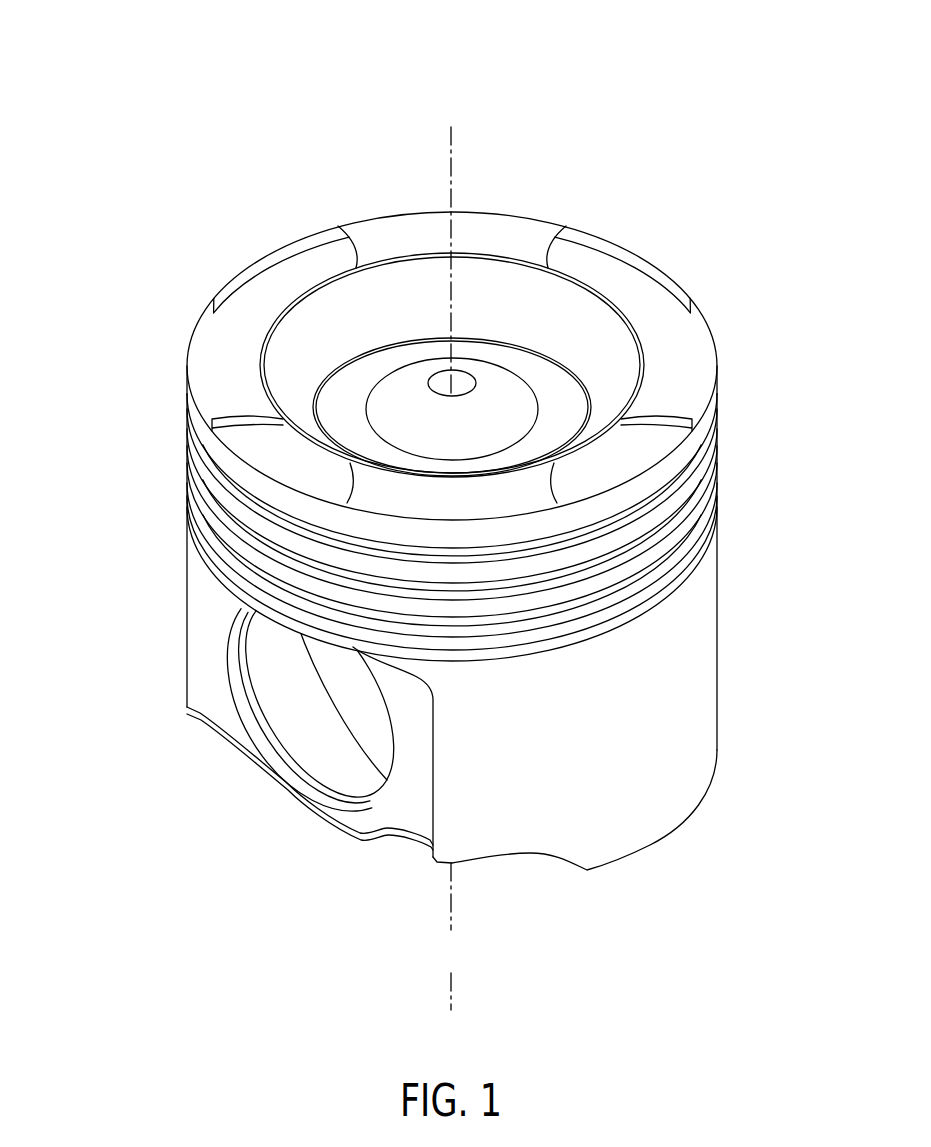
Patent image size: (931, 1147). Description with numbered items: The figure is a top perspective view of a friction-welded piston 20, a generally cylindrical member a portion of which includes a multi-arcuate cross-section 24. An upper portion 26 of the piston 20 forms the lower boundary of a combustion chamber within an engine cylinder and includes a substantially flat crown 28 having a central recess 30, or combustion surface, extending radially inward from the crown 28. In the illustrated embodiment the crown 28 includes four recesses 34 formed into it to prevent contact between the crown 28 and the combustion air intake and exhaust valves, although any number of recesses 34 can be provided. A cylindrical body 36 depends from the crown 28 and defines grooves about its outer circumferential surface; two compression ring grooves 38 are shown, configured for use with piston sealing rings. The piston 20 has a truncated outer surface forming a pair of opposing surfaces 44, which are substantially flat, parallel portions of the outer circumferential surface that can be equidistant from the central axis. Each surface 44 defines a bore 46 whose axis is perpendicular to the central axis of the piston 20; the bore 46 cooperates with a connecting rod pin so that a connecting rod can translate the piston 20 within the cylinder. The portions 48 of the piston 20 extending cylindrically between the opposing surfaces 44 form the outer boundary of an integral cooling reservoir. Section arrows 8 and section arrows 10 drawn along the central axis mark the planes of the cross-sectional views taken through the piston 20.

The section line 8-8 arrows 8 is at (488, 965).
The section line 10-10 arrows 10 is at (466, 1033).
The piston 20 is at (431, 477).
The multi-arcuate cross-section 24 is at (330, 733).
The upper portion 26 is at (389, 325).
The crown 28 is at (470, 366).
The central recess 30 is at (452, 349).
The recess 34 is at (483, 363).
The cylindrical body 36 is at (484, 572).
The compression ring grooves 38 is at (452, 515).
The opposing surfaces 44 is at (284, 622).
The bore 46 is at (319, 698).
The portions 48 is at (584, 810).